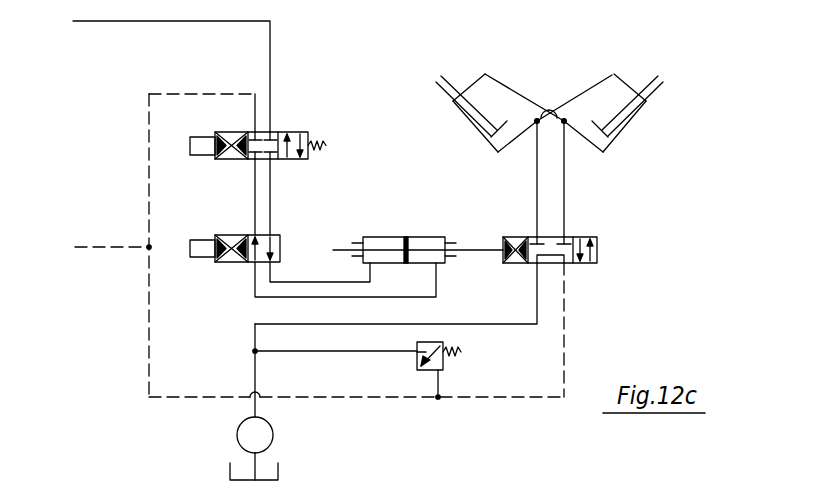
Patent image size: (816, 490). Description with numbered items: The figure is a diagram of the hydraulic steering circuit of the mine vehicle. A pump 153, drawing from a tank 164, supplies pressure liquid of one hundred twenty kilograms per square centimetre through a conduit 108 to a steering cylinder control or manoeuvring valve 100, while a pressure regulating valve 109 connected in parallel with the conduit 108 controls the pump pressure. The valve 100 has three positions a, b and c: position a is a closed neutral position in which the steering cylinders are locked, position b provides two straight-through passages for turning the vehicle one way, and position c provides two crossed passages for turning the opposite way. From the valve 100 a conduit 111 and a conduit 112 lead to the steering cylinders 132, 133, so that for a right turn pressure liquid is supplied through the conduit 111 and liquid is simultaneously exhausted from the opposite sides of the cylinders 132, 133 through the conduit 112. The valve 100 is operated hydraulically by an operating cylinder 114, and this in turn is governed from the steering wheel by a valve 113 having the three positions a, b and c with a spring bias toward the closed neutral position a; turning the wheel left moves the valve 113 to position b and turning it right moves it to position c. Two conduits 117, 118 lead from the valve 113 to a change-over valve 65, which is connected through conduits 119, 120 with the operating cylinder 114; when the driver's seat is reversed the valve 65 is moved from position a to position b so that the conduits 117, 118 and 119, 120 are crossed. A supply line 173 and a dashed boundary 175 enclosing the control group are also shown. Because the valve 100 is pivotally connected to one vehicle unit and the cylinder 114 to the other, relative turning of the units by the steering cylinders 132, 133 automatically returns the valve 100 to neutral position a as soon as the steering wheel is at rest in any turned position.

The supply line 173 is at (145, 23).
The control unit boundary 175 is at (83, 248).
The valve 113 is at (250, 160).
The conduit 117 is at (254, 207).
The conduit 118 is at (272, 220).
The change-over valve 65 is at (252, 262).
The conduit 120 is at (352, 282).
The conduit 119 is at (437, 297).
The operating cylinder 114 is at (380, 236).
The conduit 108 is at (400, 323).
The pressure regulating valve 109 is at (417, 364).
The pump 153 is at (273, 436).
The tank 164 is at (251, 477).
The conduit 111 is at (535, 195).
The conduit 112 is at (566, 175).
The steering cylinder 133 is at (470, 128).
The steering cylinder 132 is at (625, 130).
The steering cylinder control valve 100 is at (597, 247).
The position a is at (277, 132).
The position b is at (295, 132).
The position c is at (233, 132).